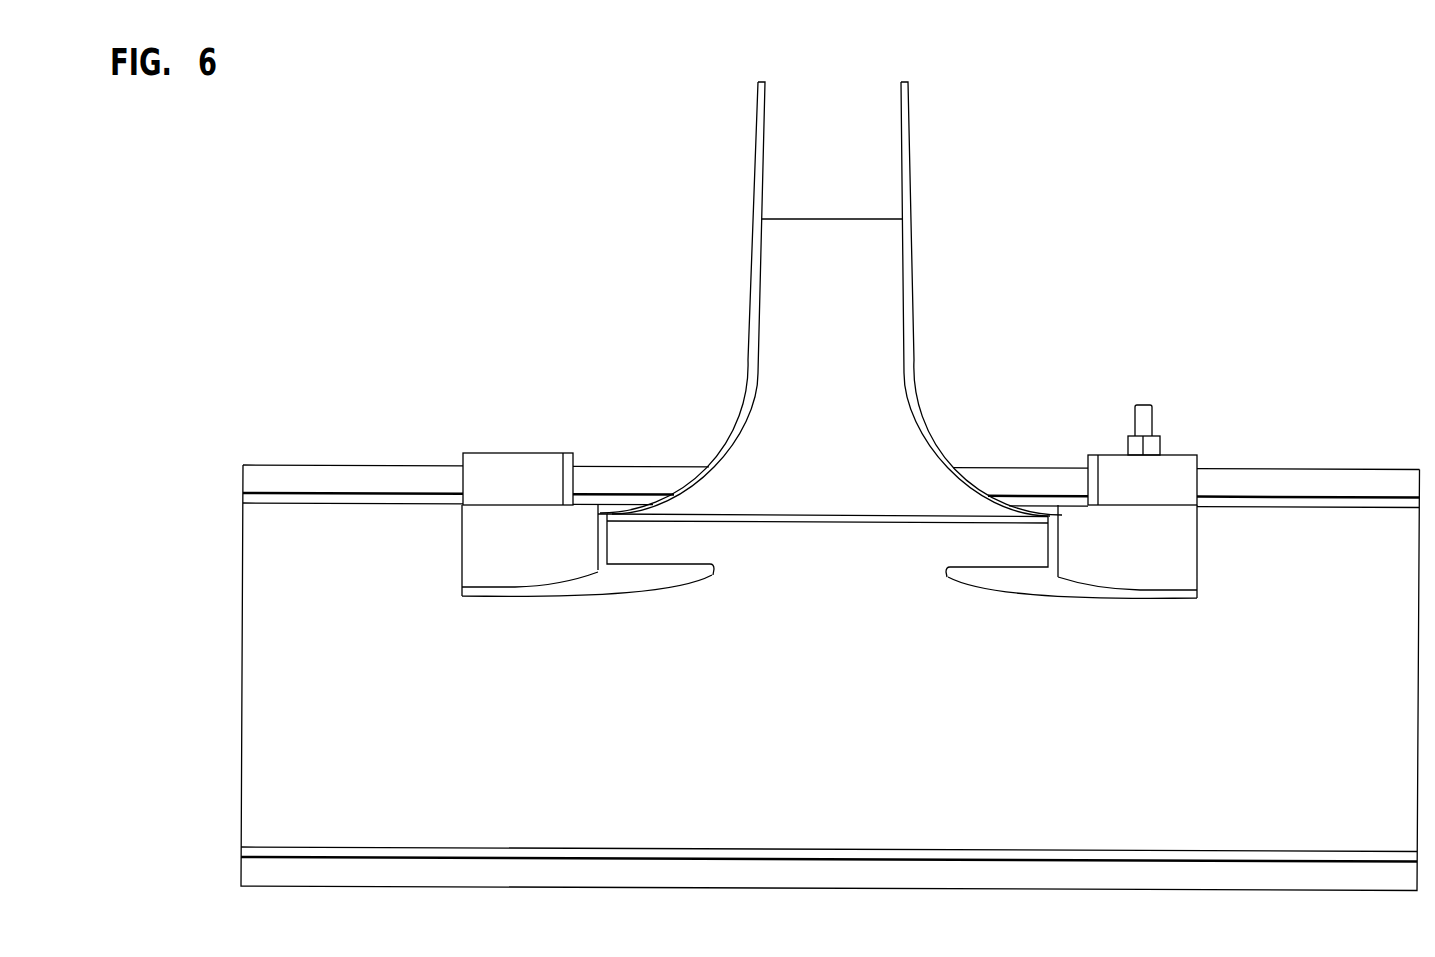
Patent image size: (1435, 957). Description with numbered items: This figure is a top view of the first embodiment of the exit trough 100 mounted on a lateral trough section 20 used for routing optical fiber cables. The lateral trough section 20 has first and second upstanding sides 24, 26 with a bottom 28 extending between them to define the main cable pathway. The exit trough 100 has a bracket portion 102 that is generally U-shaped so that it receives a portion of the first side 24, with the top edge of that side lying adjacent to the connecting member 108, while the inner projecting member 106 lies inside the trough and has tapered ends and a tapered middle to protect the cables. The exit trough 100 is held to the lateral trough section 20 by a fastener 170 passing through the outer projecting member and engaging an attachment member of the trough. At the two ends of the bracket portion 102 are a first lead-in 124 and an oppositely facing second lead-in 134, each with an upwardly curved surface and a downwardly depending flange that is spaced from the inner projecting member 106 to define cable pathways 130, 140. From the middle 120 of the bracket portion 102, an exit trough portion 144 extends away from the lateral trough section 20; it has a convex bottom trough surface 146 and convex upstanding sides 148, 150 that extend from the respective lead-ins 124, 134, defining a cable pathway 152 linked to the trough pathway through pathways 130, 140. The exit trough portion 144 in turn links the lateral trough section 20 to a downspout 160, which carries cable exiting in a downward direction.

The lateral trough section 20 is at (1258, 766).
The first upstanding side 24 is at (343, 503).
The second upstanding side 26 is at (440, 848).
The bottom 28 is at (862, 762).
The exit trough 100 is at (831, 376).
The bracket portion 102 is at (466, 452).
The inner projecting member 106 is at (830, 522).
The connecting member 108 is at (525, 472).
The middle 120 is at (860, 523).
The first lead-in 124 is at (525, 565).
The cable pathway 130 is at (686, 551).
The second lead-in 134 is at (1160, 575).
The cable pathway 140 is at (1014, 551).
The exit trough portion 144 is at (728, 437).
The bottom trough surface 146 is at (860, 485).
The upstanding side 148 is at (708, 472).
The upstanding side 150 is at (965, 485).
The cable pathway 152 is at (860, 425).
The downspout 160 is at (912, 138).
The fastener 170 is at (1147, 408).